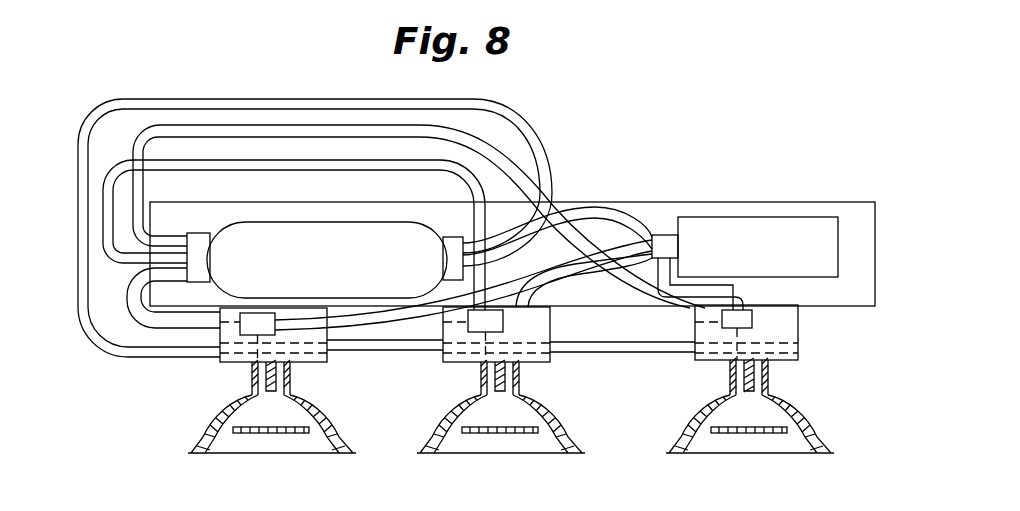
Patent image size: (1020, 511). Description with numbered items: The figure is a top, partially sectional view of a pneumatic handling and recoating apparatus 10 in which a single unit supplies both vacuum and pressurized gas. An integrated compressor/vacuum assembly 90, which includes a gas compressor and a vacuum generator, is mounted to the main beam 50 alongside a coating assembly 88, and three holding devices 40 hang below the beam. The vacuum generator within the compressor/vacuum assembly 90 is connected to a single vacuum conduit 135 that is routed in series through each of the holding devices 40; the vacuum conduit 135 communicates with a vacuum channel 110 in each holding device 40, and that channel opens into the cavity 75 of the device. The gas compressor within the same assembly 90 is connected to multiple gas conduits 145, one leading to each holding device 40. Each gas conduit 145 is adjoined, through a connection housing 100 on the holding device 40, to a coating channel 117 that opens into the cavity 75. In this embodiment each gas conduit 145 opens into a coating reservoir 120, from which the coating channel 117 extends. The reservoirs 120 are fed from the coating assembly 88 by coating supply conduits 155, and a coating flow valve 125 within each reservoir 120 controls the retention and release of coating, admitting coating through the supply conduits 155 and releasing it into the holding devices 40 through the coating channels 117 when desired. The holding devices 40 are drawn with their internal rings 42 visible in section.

The pneumatic handling and recoating apparatus 10 is at (648, 105).
The holding device 40 is at (233, 452).
The suction cup ring 42 is at (298, 433).
The main beam 50 is at (847, 200).
The cavity 75 is at (245, 415).
The coating assembly 88 is at (717, 217).
The compressor/vacuum assembly 90 is at (320, 222).
The connection housing 100 is at (300, 363).
The vacuum channel 110 is at (253, 377).
The coating channel 117 is at (240, 392).
The coating reservoir 120 is at (217, 337).
The coating flow valve 125 is at (237, 337).
The vacuum conduit 135 is at (483, 100).
The gas conduit 145 is at (212, 127).
The coating supply conduit 155 is at (600, 210).